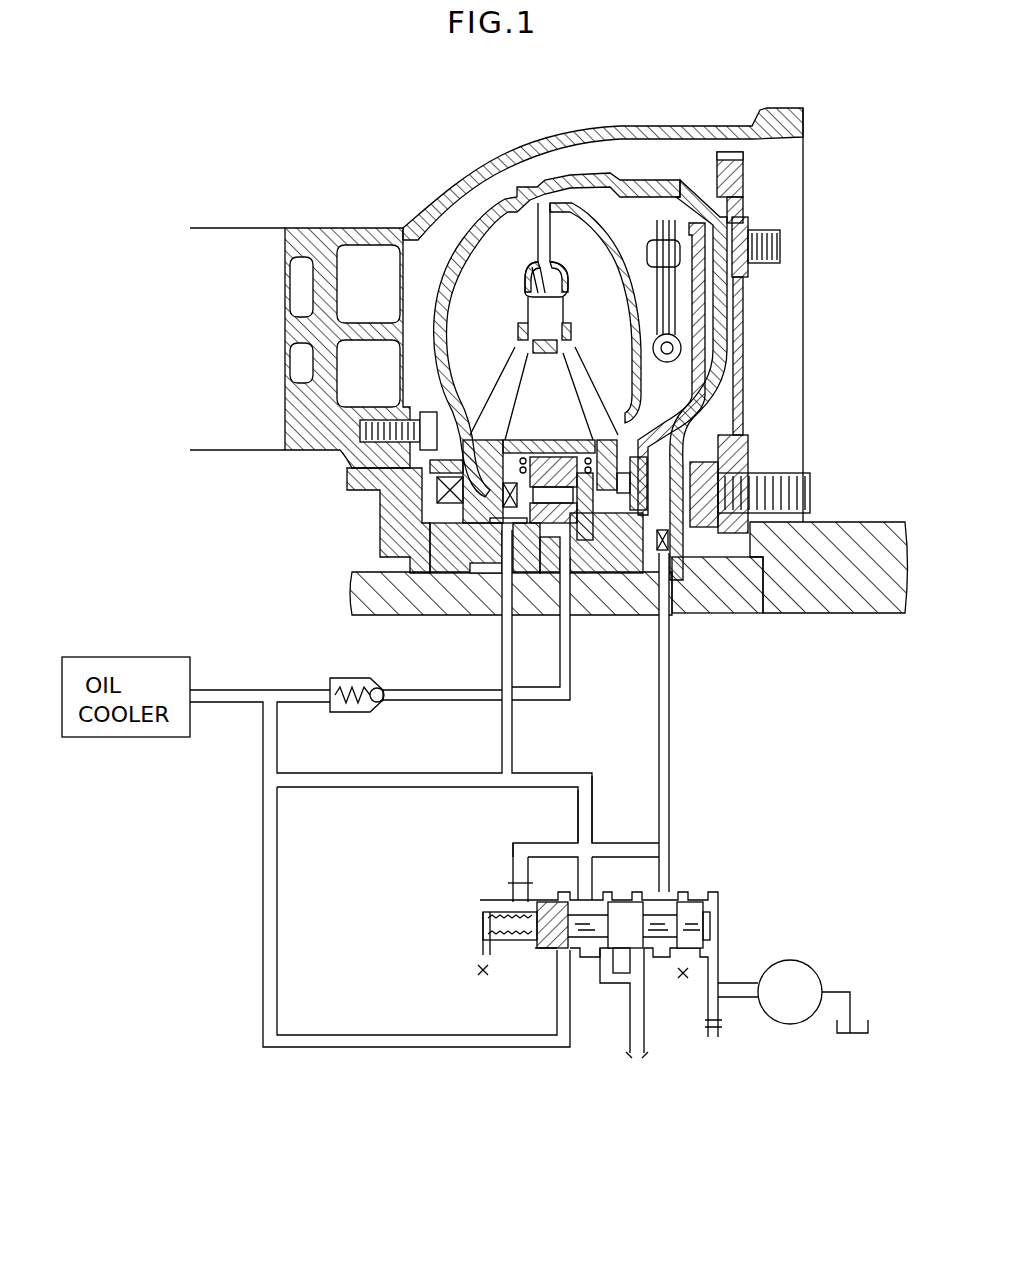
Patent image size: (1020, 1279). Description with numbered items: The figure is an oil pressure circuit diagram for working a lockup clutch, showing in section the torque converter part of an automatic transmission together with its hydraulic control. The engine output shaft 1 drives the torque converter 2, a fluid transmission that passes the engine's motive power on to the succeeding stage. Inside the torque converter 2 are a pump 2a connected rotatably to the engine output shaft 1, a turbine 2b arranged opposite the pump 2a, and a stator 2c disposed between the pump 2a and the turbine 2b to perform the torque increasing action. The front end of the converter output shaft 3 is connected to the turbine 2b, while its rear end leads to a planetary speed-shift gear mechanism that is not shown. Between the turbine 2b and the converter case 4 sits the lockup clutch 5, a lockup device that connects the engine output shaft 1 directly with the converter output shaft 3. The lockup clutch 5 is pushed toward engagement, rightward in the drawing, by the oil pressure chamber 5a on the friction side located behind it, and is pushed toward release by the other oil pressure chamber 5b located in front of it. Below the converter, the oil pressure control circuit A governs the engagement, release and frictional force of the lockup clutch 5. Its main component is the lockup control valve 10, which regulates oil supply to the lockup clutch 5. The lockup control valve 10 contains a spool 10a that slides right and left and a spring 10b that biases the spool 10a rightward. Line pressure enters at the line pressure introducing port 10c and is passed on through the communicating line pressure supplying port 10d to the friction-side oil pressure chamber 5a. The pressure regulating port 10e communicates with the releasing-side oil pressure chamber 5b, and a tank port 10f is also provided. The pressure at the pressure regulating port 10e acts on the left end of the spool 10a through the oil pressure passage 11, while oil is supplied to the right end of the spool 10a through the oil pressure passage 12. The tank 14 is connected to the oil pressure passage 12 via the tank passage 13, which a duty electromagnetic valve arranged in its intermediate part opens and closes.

The engine output shaft 1 is at (845, 598).
The torque converter 2 is at (510, 182).
The pump 2a is at (500, 272).
The turbine 2b is at (577, 267).
The stator 2c is at (527, 398).
The converter output shaft 3 is at (465, 618).
The converter case 4 is at (713, 368).
The lockup clutch 5 is at (697, 305).
The oil pressure chamber on the friction side 5a is at (646, 248).
The oil pressure chamber on the releasing side 5b is at (690, 398).
The lockup control valve 10 is at (630, 925).
The spool 10a is at (655, 920).
The spring 10b is at (507, 950).
The line pressure introducing port 10c is at (600, 963).
The line pressure supplying port 10d is at (583, 884).
The pressure regulating port 10e is at (670, 870).
The tank port 10f is at (685, 957).
The oil pressure passage 11 is at (620, 843).
The oil pressure passage 12 is at (710, 1017).
The tank passage 13 is at (737, 990).
The tank 14 is at (868, 1037).
The oil pressure control circuit A is at (792, 842).